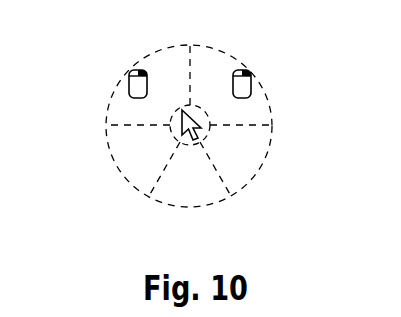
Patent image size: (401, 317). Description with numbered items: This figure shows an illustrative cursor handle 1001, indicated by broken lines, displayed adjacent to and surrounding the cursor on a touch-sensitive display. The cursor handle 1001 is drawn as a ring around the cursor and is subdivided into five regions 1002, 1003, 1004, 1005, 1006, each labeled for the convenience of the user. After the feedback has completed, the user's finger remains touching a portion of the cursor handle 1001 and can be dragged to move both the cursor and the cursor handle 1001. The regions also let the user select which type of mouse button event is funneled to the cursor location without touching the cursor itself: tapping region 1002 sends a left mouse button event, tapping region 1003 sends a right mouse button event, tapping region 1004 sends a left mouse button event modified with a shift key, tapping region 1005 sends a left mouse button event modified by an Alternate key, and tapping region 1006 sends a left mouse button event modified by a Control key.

The cursor handle 1001 is at (104, 134).
The region 1002 is at (168, 65).
The region 1003 is at (215, 68).
The region 1004 is at (257, 146).
The region 1005 is at (203, 188).
The region 1006 is at (141, 170).